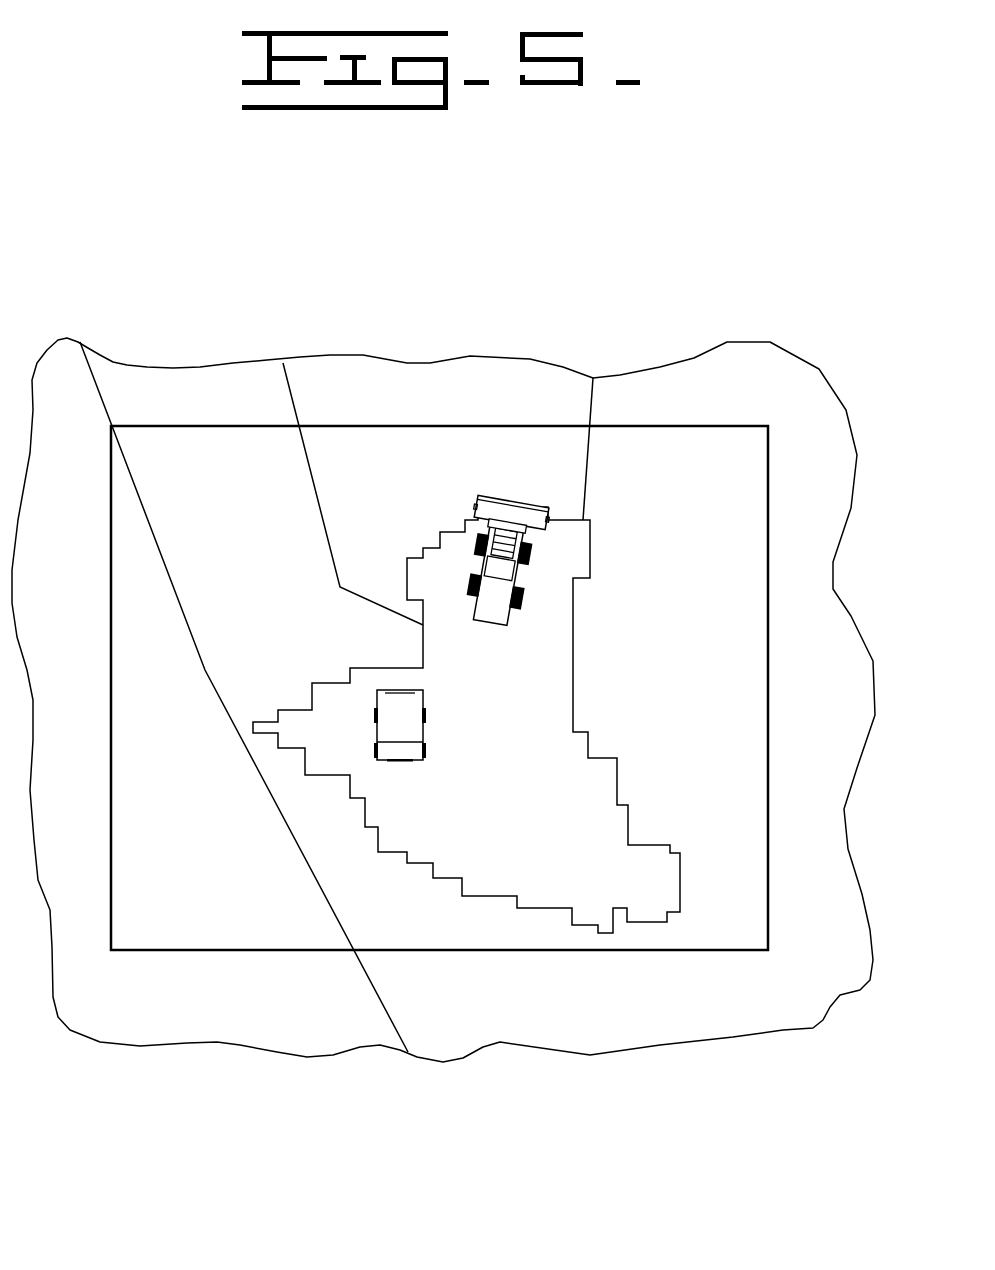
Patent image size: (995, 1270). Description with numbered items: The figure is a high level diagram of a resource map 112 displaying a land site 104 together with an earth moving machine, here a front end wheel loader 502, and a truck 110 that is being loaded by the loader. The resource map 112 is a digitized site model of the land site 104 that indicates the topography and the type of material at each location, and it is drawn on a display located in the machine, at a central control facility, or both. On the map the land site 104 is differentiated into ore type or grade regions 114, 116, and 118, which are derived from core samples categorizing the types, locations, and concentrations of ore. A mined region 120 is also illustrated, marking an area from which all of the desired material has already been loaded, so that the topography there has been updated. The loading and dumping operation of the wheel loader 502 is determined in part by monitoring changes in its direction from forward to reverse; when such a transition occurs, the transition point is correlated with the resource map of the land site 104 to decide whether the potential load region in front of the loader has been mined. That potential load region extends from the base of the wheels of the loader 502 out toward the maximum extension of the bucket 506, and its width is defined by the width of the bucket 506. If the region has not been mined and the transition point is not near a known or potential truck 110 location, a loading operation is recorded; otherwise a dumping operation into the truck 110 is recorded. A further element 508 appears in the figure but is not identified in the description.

The land site 104 is at (660, 1044).
The truck 110 is at (423, 732).
The resource map 112 is at (677, 951).
The ore type or grade region 114 is at (465, 462).
The ore type or grade region 116 is at (200, 818).
The ore type or grade region 118 is at (252, 530).
The mined region 120 is at (530, 860).
The front end wheel loader 502 is at (547, 567).
The bucket 506 is at (507, 497).
The machine body 508 is at (482, 624).